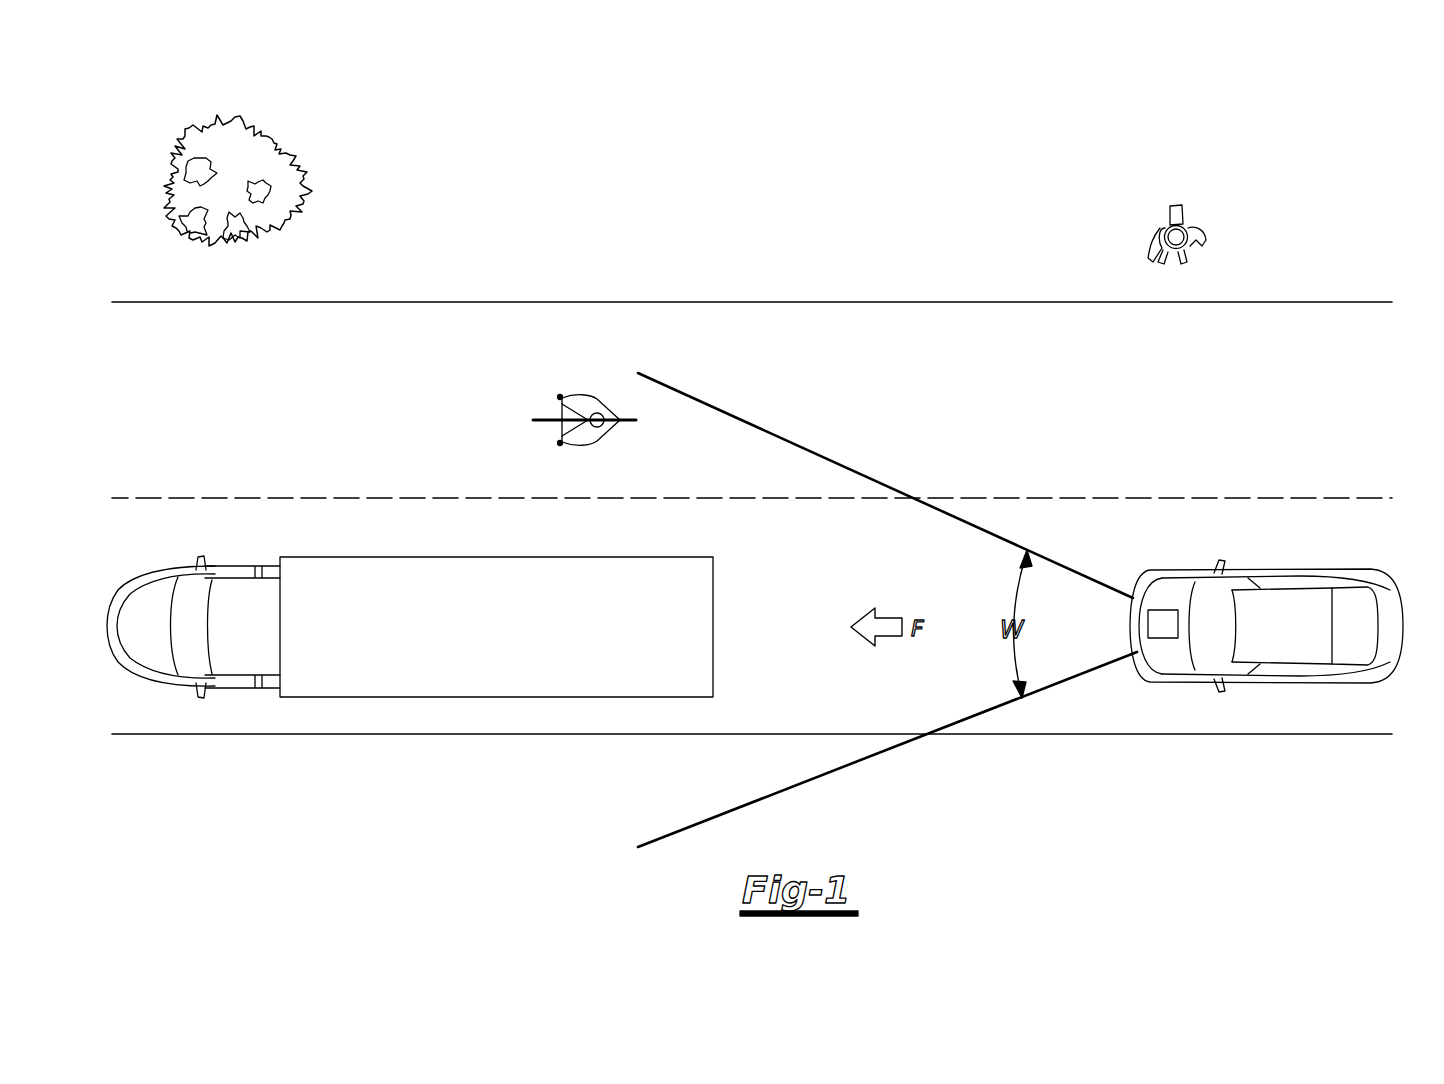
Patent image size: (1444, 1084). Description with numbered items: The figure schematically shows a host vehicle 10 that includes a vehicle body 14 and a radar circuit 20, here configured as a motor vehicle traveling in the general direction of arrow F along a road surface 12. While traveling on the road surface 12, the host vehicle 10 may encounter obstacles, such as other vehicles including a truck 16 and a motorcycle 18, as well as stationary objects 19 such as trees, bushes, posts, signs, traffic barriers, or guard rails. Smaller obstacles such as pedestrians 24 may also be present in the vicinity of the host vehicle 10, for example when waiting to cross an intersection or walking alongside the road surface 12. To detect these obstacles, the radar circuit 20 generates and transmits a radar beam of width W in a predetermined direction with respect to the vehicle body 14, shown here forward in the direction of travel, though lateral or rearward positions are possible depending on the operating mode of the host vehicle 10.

The host vehicle 10 is at (1283, 612).
The road surface 12 is at (855, 343).
The vehicle body 14 is at (1182, 570).
The truck 16 is at (504, 640).
The motorcycle 18 is at (540, 390).
The stationary objects 19 is at (251, 152).
The radar circuit 20 is at (1162, 632).
The pedestrians 24 is at (1205, 198).